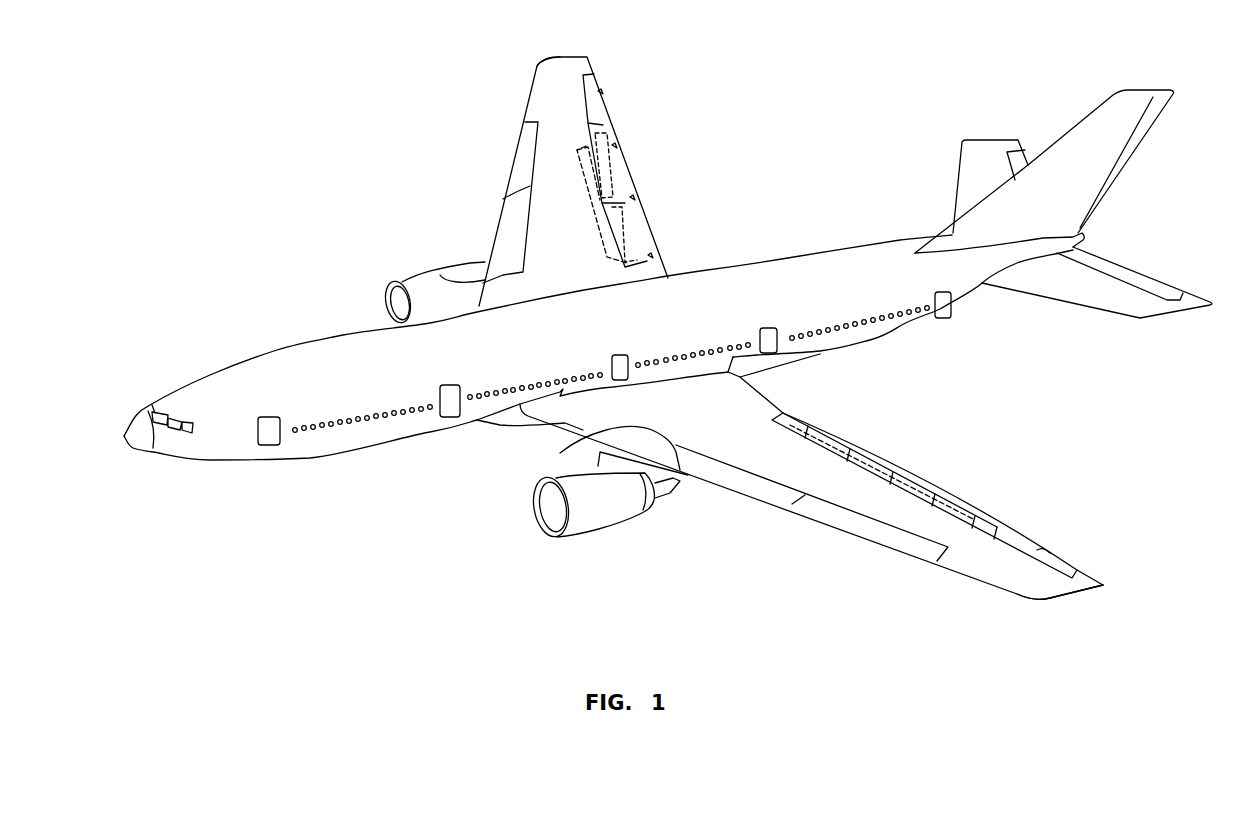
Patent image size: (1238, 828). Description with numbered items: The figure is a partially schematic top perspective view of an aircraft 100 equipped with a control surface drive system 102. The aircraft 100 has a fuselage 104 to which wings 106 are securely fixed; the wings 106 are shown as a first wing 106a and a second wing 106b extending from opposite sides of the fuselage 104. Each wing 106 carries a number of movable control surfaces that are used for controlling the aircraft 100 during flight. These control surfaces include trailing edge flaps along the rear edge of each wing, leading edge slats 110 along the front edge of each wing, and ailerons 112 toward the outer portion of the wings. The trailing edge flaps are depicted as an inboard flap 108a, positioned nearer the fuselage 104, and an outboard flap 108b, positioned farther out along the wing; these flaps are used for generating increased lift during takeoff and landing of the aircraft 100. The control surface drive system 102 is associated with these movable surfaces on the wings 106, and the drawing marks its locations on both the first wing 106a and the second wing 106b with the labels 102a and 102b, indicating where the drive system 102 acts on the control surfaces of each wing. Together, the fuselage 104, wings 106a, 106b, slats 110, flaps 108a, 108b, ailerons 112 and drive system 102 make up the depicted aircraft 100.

The aircraft 100 is at (308, 152).
The control surface drive system 102 is at (574, 177).
The sensor 102a is at (805, 418).
The sensor strip 102b is at (580, 147).
The fuselage 104 is at (275, 347).
The wings 106 is at (513, 138).
The first wing 106a is at (1052, 592).
The second wing 106b is at (536, 70).
The inboard flap 108a is at (628, 228).
The outboard flap 108b is at (592, 126).
The leading edge slats 110 is at (503, 226).
The ailerons 112 is at (595, 79).